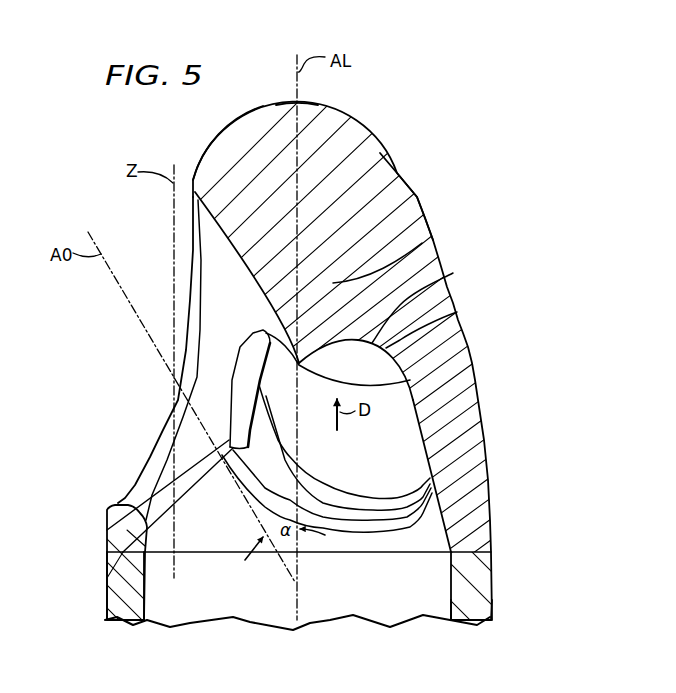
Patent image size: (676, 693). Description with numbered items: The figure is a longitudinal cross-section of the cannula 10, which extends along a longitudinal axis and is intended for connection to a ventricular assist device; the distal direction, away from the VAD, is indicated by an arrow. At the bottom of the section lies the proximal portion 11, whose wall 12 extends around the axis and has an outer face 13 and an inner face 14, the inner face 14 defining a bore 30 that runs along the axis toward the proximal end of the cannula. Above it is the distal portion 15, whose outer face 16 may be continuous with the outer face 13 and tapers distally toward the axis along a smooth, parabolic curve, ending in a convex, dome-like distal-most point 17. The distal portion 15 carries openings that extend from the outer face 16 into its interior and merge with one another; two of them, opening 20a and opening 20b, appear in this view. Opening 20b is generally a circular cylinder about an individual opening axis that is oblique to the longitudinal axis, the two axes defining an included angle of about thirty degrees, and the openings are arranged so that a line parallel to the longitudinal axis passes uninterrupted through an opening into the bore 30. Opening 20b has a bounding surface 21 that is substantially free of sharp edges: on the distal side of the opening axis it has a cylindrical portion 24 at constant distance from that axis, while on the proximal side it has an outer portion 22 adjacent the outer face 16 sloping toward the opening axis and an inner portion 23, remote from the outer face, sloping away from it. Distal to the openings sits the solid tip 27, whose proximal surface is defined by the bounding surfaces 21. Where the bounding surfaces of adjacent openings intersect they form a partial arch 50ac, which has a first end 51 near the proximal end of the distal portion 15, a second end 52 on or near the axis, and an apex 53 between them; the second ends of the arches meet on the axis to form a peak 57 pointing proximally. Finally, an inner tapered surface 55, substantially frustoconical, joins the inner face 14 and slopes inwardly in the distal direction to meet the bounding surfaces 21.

The cannula 10 is at (414, 137).
The proximal portion 11 is at (499, 607).
The wall 12 is at (478, 612).
The outer face 13 is at (492, 570).
The inner face 14 is at (145, 590).
The distal portion 15 is at (236, 157).
The outer face 16 is at (418, 196).
The distal-most point 17 is at (301, 102).
The opening 20a is at (392, 476).
The opening 20b is at (189, 417).
The bounding surface 21 is at (220, 240).
The outer portion 22 is at (110, 506).
The inner portion 23 is at (162, 522).
The cylindrical portion 24 is at (233, 277).
The solid tip 27 is at (422, 243).
The bore 30 is at (389, 640).
The partial arch 50ac is at (403, 361).
The first end 51 is at (424, 444).
The second end 52 is at (457, 312).
The apex 53 is at (453, 273).
The inner tapered surface 55 is at (430, 527).
The peak 57 is at (412, 379).